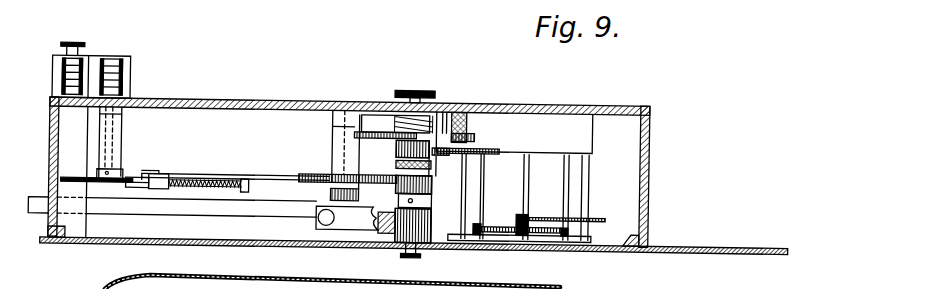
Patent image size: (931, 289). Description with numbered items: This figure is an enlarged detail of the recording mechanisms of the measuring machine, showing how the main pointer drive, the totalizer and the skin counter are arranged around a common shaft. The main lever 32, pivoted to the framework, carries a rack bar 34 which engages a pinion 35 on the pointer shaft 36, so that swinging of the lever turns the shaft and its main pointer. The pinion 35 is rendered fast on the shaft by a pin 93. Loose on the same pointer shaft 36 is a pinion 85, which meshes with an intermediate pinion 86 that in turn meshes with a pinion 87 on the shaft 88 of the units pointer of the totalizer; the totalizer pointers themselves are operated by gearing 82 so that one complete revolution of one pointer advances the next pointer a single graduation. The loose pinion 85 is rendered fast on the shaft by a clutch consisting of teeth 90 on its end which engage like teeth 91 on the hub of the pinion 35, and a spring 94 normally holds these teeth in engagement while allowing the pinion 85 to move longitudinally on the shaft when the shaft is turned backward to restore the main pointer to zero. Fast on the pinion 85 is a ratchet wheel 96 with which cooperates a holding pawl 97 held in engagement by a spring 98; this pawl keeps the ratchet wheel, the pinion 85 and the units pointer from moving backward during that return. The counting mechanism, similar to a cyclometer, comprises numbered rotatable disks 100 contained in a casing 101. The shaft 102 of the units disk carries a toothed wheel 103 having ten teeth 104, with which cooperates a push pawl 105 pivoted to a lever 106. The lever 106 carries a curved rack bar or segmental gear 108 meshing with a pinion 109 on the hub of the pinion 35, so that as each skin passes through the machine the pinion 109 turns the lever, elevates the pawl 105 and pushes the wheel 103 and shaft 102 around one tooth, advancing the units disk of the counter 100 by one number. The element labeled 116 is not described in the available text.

The main lever 32 is at (414, 193).
The rack bar 34 is at (372, 226).
The pinion 35 is at (433, 209).
The pointer shaft 36 is at (399, 254).
The gearing 82 is at (548, 210).
The loose pinion 85 is at (397, 142).
The intermediate pinion 86 is at (440, 149).
The pinion 87 is at (490, 147).
The shaft 88 is at (485, 188).
The clutch teeth 90 is at (397, 157).
The clutch teeth 91 is at (443, 172).
The pin 93 is at (398, 189).
The spring 94 is at (393, 123).
The ratchet wheel 96 is at (476, 131).
The holding pawl 97 is at (466, 106).
The spring 98 is at (446, 106).
The rotatable disks 100 is at (131, 73).
The casing 101 is at (97, 55).
The shaft 102 is at (123, 146).
The toothed wheel 103 is at (79, 177).
The teeth 104 is at (132, 186).
The push pawl 105 is at (165, 172).
The lever 106 is at (262, 172).
The segmental gear 108 is at (318, 170).
The pinion 109 is at (433, 194).
The spring 116 is at (208, 191).